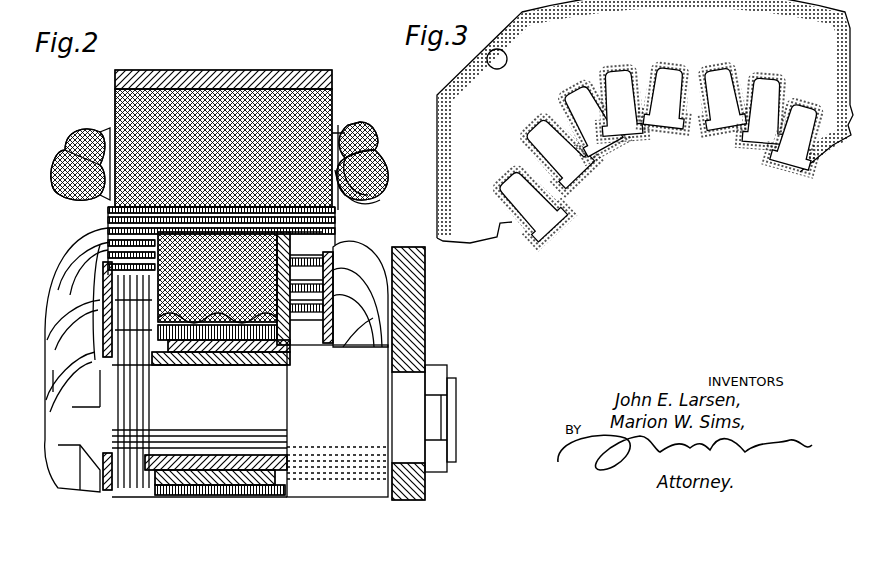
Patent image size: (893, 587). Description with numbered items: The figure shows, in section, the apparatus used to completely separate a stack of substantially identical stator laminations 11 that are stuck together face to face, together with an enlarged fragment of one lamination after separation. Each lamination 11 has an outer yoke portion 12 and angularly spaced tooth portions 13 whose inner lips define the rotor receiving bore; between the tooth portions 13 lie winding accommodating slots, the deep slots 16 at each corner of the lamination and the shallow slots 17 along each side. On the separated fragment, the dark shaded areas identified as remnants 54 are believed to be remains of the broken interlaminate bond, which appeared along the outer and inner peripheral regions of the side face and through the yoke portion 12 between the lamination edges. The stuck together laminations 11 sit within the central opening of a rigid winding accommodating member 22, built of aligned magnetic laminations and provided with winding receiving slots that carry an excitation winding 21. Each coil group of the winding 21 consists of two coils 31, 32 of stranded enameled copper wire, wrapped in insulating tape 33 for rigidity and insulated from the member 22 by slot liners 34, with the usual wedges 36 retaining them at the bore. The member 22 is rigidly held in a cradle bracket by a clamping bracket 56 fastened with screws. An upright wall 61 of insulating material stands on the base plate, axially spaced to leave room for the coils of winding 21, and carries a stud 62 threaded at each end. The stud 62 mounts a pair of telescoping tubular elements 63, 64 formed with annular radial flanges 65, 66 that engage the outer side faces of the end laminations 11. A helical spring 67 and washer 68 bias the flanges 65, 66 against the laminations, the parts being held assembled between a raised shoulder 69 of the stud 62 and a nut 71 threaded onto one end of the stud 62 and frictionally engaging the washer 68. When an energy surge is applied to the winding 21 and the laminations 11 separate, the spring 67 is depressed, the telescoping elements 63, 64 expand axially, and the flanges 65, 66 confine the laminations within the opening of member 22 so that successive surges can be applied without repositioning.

In FIG. 2, the stator laminations 11 is at (328, 252).
In FIG. 3, the stator laminations 11 is at (468, 63).
In FIG. 3, the yoke portion 12 is at (455, 193).
In FIG. 3, the tooth portions 13 is at (617, 130).
In FIG. 3, the deep slots 16 is at (803, 120).
In FIG. 3, the shallow slots 17 is at (718, 93).
In FIG. 2, the excitation winding 21 is at (58, 237).
In FIG. 2, the winding accommodating member 22 is at (115, 106).
In FIG. 2, the coil 31 is at (370, 145).
In FIG. 2, the coil 32 is at (382, 177).
In FIG. 2, the insulating tape 33 is at (353, 143).
In FIG. 2, the insulating slot liners 34 is at (338, 133).
In FIG. 2, the wedges 36 is at (342, 256).
In FIG. 3, the remnants of broken interlaminate bond 54 is at (640, 42).
In FIG. 2, the clamping bracket 56 is at (212, 84).
In FIG. 2, the upright wall 61 is at (420, 317).
In FIG. 2, the stud 62 is at (378, 364).
In FIG. 2, the telescoping tubular element 63 is at (220, 370).
In FIG. 2, the telescoping tubular element 64 is at (250, 346).
In FIG. 2, the annular radial flange 65 is at (98, 262).
In FIG. 2, the annular radial flange 66 is at (343, 300).
In FIG. 2, the helical spring 67 is at (146, 393).
In FIG. 2, the washer 68 is at (56, 293).
In FIG. 2, the raised shoulder 69 is at (288, 365).
In FIG. 2, the nut 71 is at (88, 348).